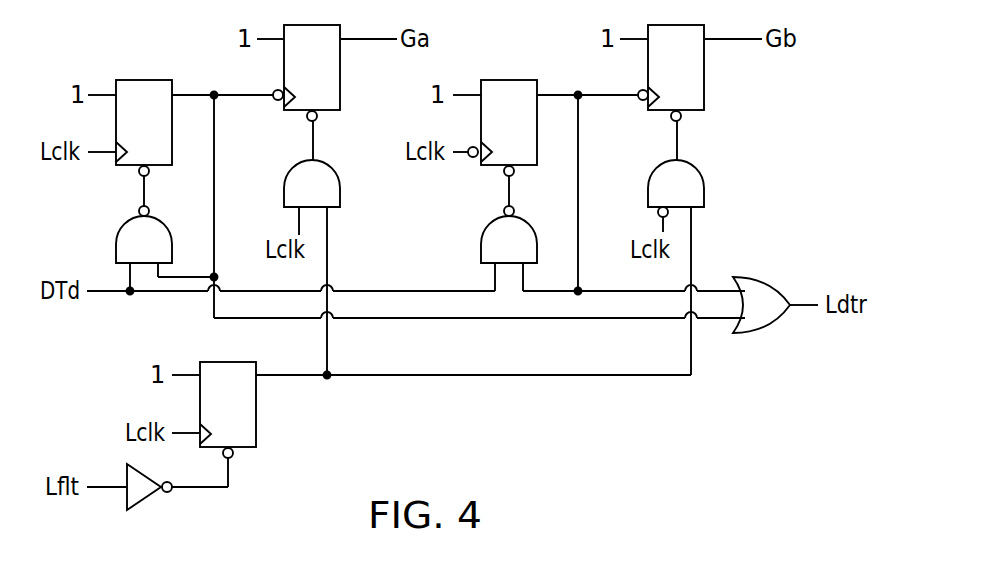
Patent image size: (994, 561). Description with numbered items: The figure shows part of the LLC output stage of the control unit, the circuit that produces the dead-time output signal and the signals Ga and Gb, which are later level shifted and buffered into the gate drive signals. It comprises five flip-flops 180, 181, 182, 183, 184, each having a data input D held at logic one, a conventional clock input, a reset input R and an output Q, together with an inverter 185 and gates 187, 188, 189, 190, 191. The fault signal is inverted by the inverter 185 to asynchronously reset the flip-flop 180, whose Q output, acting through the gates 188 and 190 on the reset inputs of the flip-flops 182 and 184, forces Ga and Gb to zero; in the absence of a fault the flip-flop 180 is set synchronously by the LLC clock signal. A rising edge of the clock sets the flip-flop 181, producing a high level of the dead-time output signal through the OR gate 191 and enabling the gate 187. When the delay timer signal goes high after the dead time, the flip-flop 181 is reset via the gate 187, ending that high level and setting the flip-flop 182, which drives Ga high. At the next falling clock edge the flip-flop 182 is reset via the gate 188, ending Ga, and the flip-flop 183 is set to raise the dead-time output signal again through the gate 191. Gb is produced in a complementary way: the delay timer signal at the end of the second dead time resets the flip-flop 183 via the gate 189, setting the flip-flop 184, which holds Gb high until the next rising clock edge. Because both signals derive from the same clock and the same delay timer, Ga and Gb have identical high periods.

The flip-flop 180 is at (228, 372).
The flip-flop 181 is at (143, 86).
The flip-flop 182 is at (335, 84).
The flip-flop 183 is at (506, 86).
The flip-flop 184 is at (700, 84).
The inverter 185 is at (130, 466).
The gate 187 is at (125, 242).
The gate 188 is at (293, 185).
The gate 189 is at (490, 242).
The gate 190 is at (657, 185).
The OR gate 191 is at (750, 280).